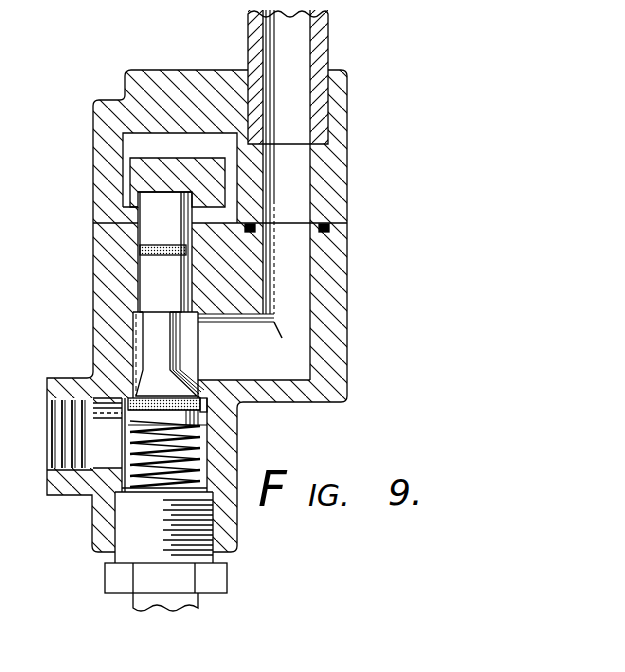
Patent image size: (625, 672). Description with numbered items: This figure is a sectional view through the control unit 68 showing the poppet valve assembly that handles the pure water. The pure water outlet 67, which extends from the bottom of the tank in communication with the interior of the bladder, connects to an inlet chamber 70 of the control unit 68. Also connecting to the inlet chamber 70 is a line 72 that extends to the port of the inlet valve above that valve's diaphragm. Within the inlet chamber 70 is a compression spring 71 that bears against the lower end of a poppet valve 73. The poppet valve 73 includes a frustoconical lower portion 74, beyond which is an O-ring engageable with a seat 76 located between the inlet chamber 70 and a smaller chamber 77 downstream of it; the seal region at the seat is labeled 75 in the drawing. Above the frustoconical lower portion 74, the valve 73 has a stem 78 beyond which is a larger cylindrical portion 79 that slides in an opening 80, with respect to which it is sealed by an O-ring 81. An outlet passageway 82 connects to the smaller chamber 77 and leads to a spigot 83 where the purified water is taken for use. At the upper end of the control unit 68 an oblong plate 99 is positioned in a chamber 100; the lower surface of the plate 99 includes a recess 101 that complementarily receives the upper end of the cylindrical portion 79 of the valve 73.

The pure water outlet 67 is at (140, 603).
The control unit 68 is at (86, 312).
The inlet chamber 70 is at (205, 438).
The compression spring 71 is at (200, 452).
The line 72 is at (52, 457).
The poppet valve 73 is at (146, 379).
The frustoconical lower portion 74 is at (186, 380).
The seat ring 75 is at (200, 405).
The seat 76 is at (130, 393).
The smaller chamber 77 is at (140, 333).
The stem 78 is at (183, 351).
The larger cylindrical portion 79 is at (145, 290).
The opening 80 is at (142, 267).
The O-ring 81 is at (140, 250).
The outlet passageway 82 is at (305, 307).
The spigot 83 is at (328, 40).
The oblong plate 99 is at (132, 162).
The chamber 100 is at (133, 142).
The recess 101 is at (145, 193).